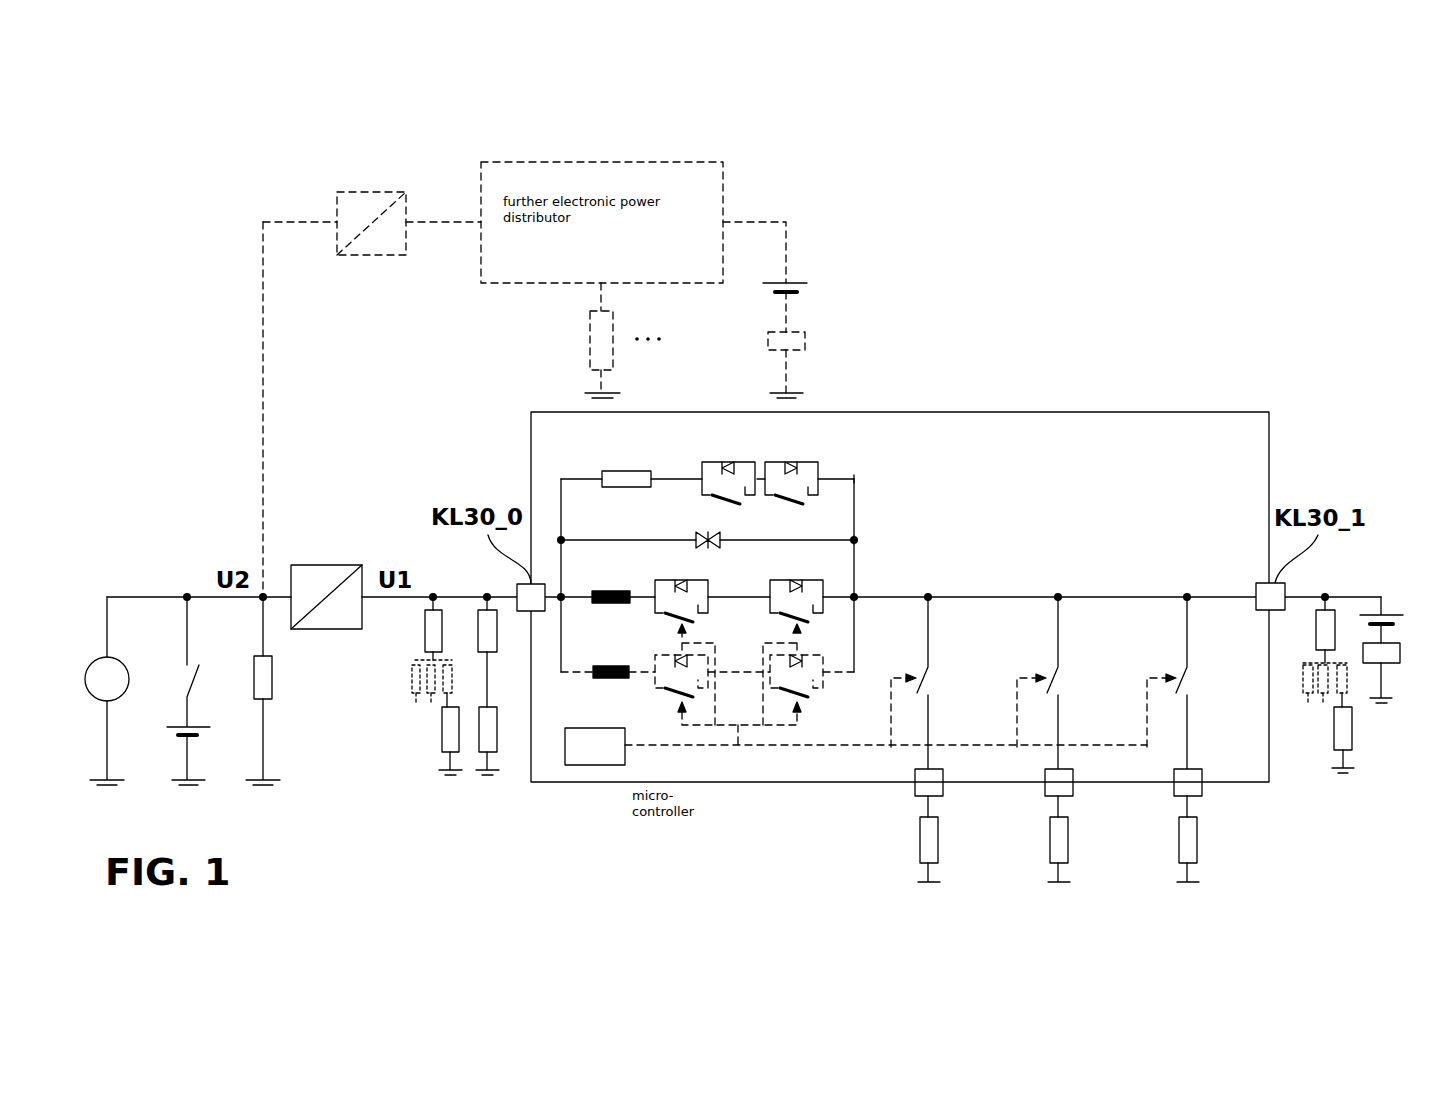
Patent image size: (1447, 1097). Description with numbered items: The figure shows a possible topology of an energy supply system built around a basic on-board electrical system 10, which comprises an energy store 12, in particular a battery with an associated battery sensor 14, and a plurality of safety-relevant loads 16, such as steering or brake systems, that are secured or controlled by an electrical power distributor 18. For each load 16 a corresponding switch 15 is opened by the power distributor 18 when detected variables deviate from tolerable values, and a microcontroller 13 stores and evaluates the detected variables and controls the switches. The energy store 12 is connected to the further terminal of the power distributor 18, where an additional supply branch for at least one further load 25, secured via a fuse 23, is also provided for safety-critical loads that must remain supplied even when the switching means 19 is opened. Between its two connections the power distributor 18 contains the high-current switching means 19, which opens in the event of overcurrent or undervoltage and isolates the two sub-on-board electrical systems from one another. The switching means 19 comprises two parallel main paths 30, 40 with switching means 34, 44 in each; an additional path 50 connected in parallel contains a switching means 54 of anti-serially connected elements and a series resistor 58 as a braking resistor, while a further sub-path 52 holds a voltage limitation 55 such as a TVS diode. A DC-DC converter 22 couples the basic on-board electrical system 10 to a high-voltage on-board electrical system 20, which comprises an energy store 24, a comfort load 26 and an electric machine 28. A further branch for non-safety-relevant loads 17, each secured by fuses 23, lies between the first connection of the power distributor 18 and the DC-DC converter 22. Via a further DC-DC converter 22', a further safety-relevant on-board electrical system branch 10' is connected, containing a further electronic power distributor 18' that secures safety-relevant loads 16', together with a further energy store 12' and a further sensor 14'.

The on-board electrical system 10 is at (1142, 258).
The on-board electrical system branch 10' is at (802, 151).
The energy store 12 is at (1386, 597).
The further energy store 12' is at (804, 276).
The microcontroller 13 is at (595, 768).
The sensor 14 is at (1395, 703).
The further sensor 14' is at (827, 361).
The switch 15 is at (918, 670).
The loads 16 is at (1028, 839).
The safety-relevant loads 16' is at (582, 340).
The loads 17 is at (448, 725).
The electrical power distributor 18 is at (900, 557).
The further electronic power distributor 18' is at (591, 215).
The switching means 19 is at (556, 489).
The high-voltage on-board electrical system 20 is at (178, 522).
The DC-DC converter 22 is at (326, 564).
The further DC-DC converter 22' is at (367, 215).
The fuse 23 is at (478, 630).
The energy store 24 is at (187, 727).
The further load 25 is at (1352, 730).
The load 26 is at (272, 680).
The electric machine 28 is at (107, 597).
The main path 30 is at (857, 595).
The switching means 34 is at (748, 582).
The main path 40 is at (838, 672).
The switching means 44 is at (668, 703).
The additional path 50 is at (857, 478).
The further sub-path 52 is at (857, 538).
The switching means 54 is at (753, 453).
The voltage limitation 55 is at (708, 536).
The series resistor 58 is at (630, 471).